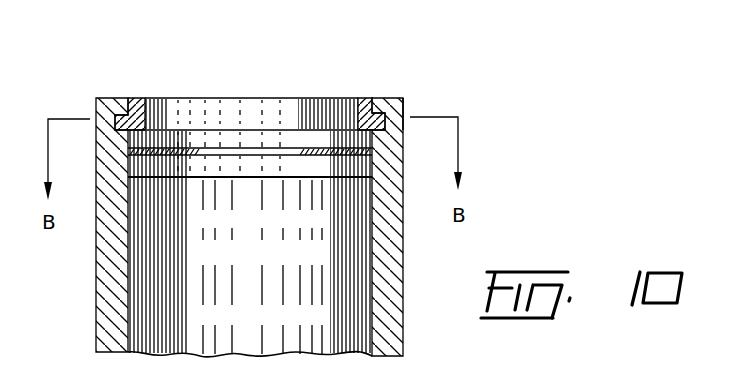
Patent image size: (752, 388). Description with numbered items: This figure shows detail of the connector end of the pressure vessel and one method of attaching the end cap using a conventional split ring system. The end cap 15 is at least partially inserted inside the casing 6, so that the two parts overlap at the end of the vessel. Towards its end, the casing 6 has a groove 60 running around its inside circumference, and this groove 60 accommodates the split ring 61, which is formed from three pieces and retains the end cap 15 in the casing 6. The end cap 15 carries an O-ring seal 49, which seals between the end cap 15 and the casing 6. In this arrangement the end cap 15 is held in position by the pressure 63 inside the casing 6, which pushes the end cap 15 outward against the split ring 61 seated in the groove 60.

The casing 6 is at (383, 257).
The end cap 15 is at (238, 115).
The O-ring seal 49 is at (167, 152).
The groove 60 is at (408, 112).
The split ring 61 is at (365, 107).
The pressure 63 is at (250, 182).